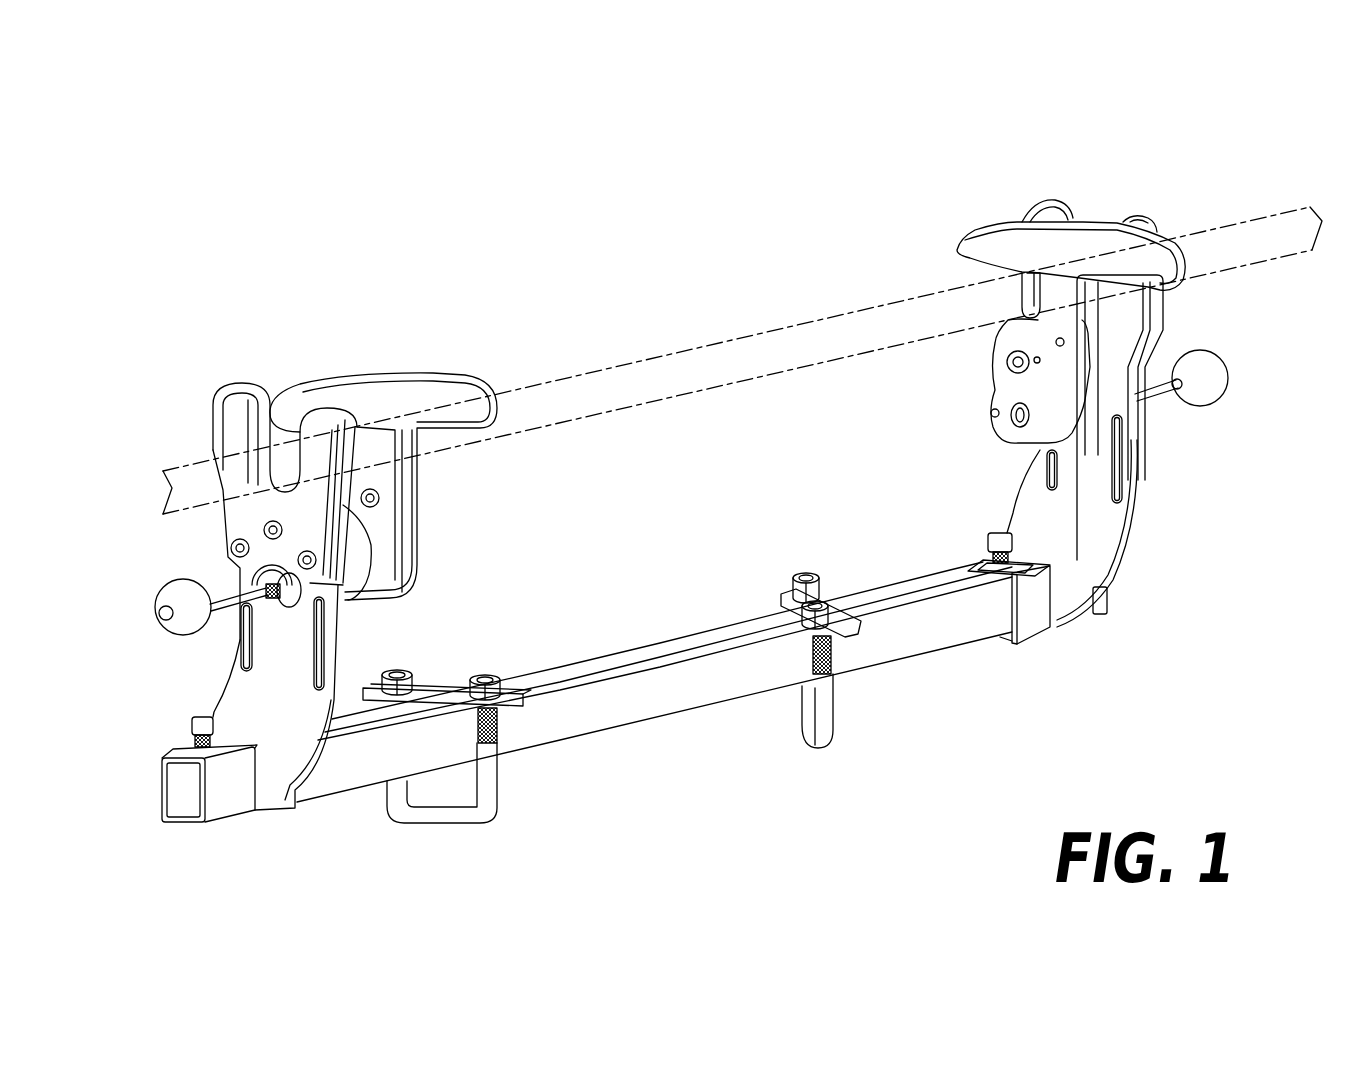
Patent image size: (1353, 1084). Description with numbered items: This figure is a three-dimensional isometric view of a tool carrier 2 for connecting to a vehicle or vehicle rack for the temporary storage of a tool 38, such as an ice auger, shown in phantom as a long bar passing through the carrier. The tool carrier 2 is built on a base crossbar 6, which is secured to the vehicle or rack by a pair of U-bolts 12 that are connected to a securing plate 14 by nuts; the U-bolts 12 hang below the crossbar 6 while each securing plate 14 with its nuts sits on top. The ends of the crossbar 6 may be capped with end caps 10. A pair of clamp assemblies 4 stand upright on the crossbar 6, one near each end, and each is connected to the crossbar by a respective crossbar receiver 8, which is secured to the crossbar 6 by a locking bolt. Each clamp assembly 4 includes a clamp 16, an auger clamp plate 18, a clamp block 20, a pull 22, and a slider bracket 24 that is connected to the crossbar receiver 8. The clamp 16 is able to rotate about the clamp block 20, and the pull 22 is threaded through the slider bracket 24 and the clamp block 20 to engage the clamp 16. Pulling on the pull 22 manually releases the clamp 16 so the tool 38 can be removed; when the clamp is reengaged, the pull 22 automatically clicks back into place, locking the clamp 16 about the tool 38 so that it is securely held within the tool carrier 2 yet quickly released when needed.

The tool carrier 2 is at (290, 200).
The clamp assemblies 4 is at (190, 360).
The base crossbar 6 is at (617, 652).
The crossbar receiver 8 is at (181, 747).
The end caps 10 is at (180, 815).
The U-bolts 12 is at (502, 797).
The securing plate 14 is at (453, 687).
The clamp 16 is at (410, 372).
The auger clamp plate 18 is at (228, 443).
The clamp block 20 is at (358, 552).
The pull 22 is at (180, 581).
The slider bracket 24 is at (263, 695).
The tool 38 is at (737, 337).